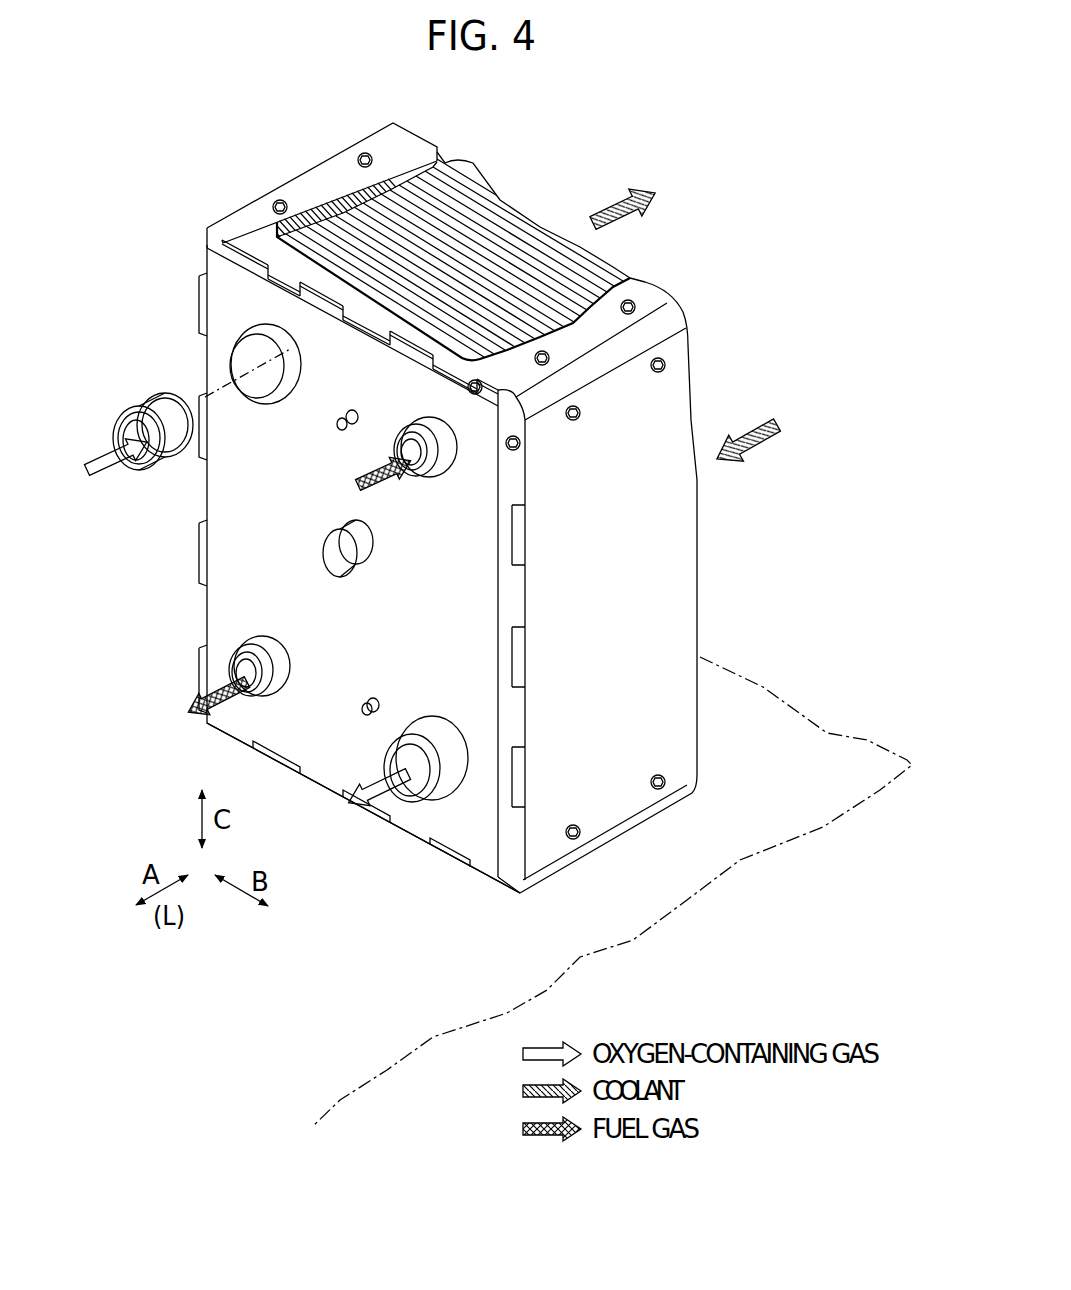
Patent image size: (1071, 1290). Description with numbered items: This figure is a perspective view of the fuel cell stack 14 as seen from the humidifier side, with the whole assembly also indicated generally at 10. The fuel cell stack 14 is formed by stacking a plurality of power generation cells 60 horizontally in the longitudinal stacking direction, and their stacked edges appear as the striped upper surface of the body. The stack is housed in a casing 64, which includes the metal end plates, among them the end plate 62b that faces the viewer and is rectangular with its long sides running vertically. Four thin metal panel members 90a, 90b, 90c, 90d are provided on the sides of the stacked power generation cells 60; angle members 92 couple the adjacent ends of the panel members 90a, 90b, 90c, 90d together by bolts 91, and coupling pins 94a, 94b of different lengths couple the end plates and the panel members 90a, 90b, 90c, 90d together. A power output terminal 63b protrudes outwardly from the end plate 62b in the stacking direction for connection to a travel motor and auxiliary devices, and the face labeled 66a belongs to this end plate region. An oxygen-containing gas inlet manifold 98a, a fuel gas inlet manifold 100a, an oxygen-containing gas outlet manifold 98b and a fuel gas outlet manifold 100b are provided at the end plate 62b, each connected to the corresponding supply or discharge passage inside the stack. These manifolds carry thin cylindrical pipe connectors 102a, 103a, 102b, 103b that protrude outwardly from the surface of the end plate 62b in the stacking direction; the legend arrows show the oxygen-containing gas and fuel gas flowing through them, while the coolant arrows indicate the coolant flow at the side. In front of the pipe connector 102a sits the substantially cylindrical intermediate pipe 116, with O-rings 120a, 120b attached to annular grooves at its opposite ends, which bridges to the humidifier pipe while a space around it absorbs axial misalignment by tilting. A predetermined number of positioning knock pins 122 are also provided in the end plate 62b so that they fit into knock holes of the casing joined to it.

The fuel cell stack 10 is at (652, 117).
The fuel cell stack 14 is at (228, 182).
The power generation cells 60 is at (487, 226).
The end plate 62b is at (426, 815).
The power output terminal 63b is at (338, 570).
The casing 64 is at (410, 152).
The end plate 66a is at (202, 353).
The panel member 90a is at (650, 800).
The panel member 90b is at (314, 186).
The panel member 90c is at (199, 295).
The panel member 90d is at (565, 862).
The bolts 91 is at (279, 199).
The angle members 92 is at (348, 150).
The coupling pin 94a is at (522, 443).
The coupling pin 94b is at (477, 396).
The oxygen-containing gas inlet manifold 98a is at (252, 401).
The oxygen-containing gas outlet manifold 98b is at (420, 720).
The fuel gas inlet manifold 100a is at (424, 428).
The fuel gas outlet manifold 100b is at (262, 633).
The pipe connector 102a is at (290, 384).
The pipe connector 102b is at (436, 741).
The pipe connector 103a is at (440, 463).
The pipe connector 103b is at (276, 692).
The intermediate pipe 116 is at (140, 465).
The O-ring 120a is at (150, 398).
The O-ring 120b is at (125, 407).
The positioning knock pins 122 is at (346, 413).